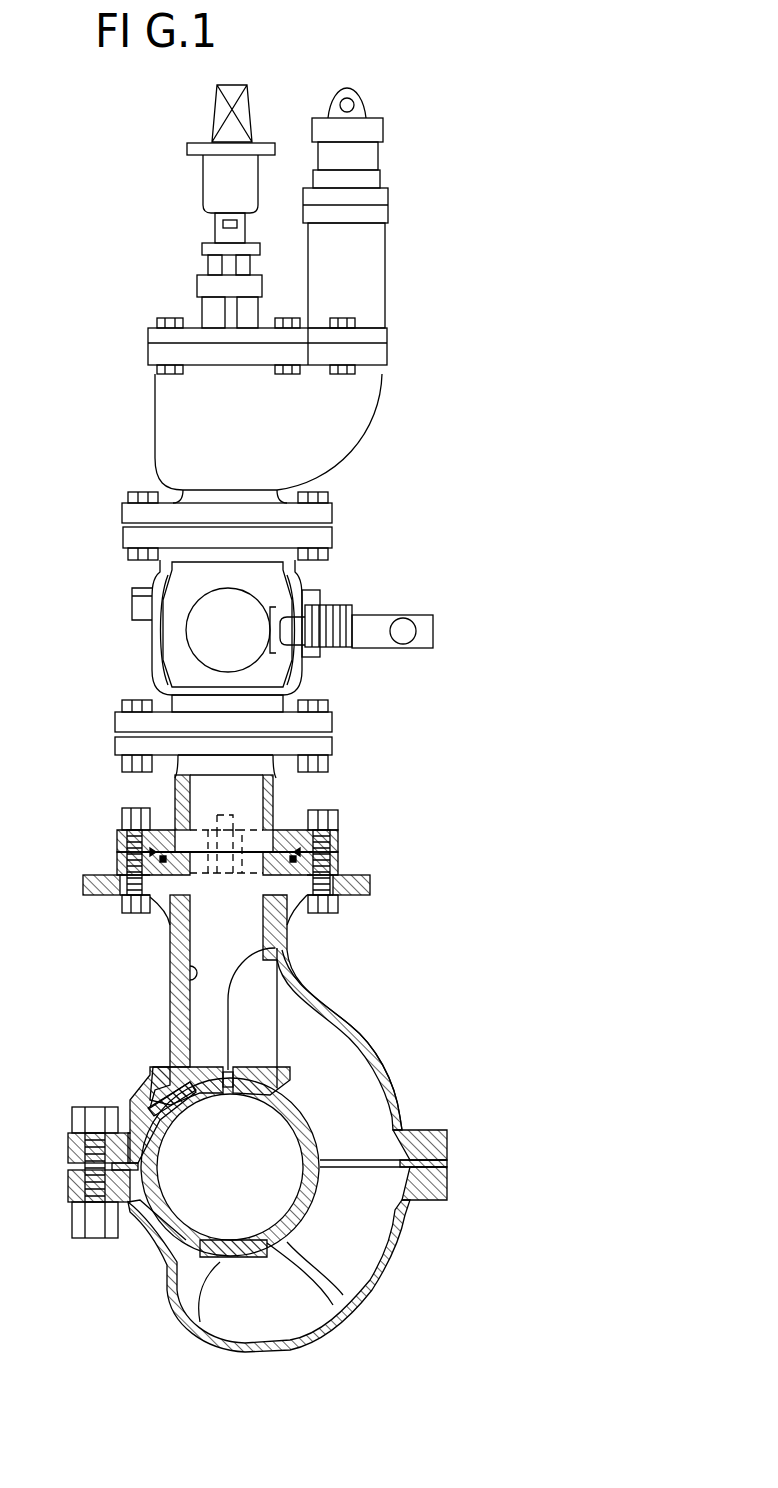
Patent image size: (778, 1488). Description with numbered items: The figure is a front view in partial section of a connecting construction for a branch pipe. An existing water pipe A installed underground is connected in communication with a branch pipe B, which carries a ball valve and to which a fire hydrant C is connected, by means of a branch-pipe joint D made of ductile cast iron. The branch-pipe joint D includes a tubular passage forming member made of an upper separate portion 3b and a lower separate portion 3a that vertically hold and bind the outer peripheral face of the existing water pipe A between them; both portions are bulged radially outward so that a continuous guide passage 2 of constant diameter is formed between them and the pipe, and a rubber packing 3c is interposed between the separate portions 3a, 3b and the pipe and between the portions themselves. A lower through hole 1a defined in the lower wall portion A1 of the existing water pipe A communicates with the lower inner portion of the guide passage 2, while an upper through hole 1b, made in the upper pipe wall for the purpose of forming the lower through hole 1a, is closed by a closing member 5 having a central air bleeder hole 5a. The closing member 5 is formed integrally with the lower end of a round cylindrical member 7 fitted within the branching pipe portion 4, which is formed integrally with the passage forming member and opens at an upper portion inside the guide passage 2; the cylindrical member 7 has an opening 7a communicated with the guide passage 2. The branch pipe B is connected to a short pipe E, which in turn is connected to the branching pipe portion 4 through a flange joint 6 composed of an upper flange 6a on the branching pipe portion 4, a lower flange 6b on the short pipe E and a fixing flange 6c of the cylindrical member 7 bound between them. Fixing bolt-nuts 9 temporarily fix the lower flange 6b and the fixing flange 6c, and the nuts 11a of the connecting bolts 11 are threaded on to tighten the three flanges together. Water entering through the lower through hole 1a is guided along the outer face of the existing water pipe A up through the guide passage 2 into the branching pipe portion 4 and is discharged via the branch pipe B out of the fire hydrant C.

The fire hydrant C is at (378, 410).
The branch pipe B is at (150, 653).
The short pipe E is at (176, 792).
The fixing bolt-nuts 9 is at (232, 813).
The flange joint 6 is at (232, 846).
The upper flange 6a is at (368, 888).
The lower flange 6b is at (302, 830).
The fixing flange 6c is at (117, 860).
The connecting bolts 11 is at (120, 893).
The nuts 11a is at (122, 812).
The branching pipe portion 4 is at (170, 955).
The round cylindrical member 7 is at (190, 987).
The opening 7a is at (242, 1031).
The branch-pipe joint D is at (382, 1060).
The upper separate portion 3b is at (392, 1087).
The lower separate portion 3a is at (368, 1282).
The rubber packing 3c is at (130, 1130).
The guide passage 2 is at (352, 1240).
The upper through hole 1b is at (249, 1100).
The lower through hole 1a is at (237, 1255).
The closing member 5 is at (207, 1108).
The air bleeder hole 5a is at (229, 1096).
The existing water pipe A is at (334, 1310).
The lower wall portion A1 is at (177, 1307).